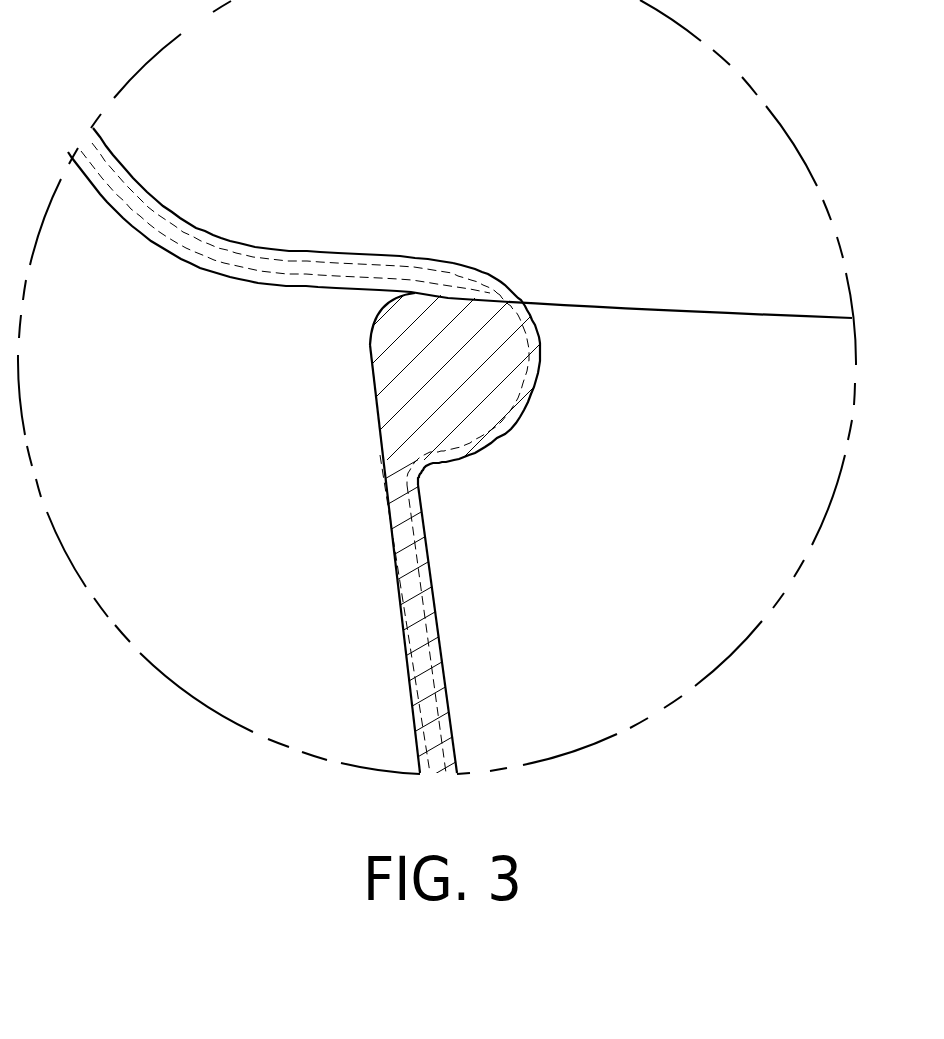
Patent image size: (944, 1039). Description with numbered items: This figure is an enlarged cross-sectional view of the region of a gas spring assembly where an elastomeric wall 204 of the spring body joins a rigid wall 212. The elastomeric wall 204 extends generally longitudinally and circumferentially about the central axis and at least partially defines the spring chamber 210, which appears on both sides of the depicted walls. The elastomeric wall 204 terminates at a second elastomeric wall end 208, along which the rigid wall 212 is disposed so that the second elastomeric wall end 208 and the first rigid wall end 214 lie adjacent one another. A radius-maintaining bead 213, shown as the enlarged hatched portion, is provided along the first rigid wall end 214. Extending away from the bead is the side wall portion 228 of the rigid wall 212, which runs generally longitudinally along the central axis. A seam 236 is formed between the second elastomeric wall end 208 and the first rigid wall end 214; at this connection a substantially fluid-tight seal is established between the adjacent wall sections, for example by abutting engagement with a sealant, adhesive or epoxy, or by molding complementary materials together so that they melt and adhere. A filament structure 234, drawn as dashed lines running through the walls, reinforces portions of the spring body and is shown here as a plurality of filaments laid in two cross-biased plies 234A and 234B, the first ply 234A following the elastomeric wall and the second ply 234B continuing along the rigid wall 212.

The elastomeric wall 204 is at (185, 278).
The second elastomeric wall end 208 is at (362, 226).
The spring chamber 210 is at (460, 62).
The rigid wall 212 is at (357, 632).
The radius-maintaining bead 213 is at (437, 360).
The first rigid wall end 214 is at (569, 357).
The side wall portion 228 is at (397, 587).
The filament structure 234 is at (443, 648).
The first cross-biased ply 234A is at (147, 208).
The second cross-biased ply 234B is at (400, 463).
The seam 236 is at (493, 297).